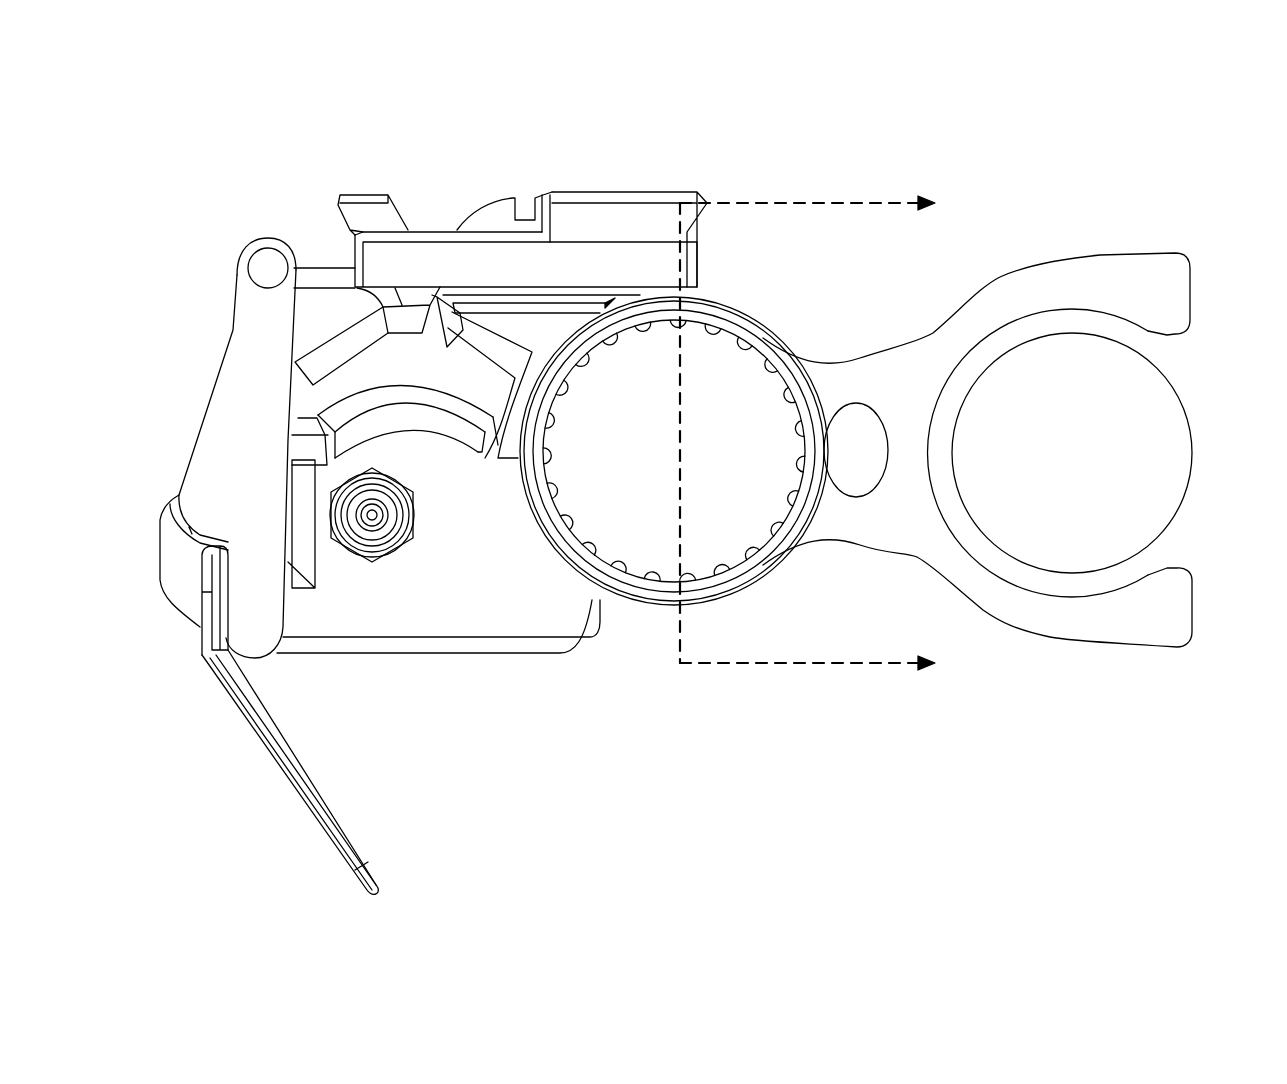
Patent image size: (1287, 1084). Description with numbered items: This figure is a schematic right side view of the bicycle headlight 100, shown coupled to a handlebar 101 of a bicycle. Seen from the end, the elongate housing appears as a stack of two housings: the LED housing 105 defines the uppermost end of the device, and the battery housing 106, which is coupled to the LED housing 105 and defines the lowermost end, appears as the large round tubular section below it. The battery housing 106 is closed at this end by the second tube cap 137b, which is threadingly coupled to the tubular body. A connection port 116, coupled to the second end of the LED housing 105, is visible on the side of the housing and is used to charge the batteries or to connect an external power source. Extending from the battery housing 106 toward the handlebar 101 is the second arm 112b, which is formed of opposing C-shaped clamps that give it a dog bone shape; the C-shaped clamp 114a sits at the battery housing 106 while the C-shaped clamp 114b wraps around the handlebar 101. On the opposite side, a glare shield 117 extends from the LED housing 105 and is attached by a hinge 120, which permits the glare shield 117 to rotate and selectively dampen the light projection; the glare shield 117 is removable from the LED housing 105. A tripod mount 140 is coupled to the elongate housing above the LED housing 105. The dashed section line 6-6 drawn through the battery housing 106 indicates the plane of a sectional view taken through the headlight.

The bicycle headlight 100 is at (856, 142).
The section line 6-6 is at (899, 203).
The LED housing 105 is at (413, 235).
The tripod mount 140 is at (588, 199).
The hinge 120 is at (266, 261).
The glare shield 117 is at (260, 752).
The second tube cap 137b is at (618, 578).
The connection port 116 is at (376, 562).
The second C-shaped clamp of first arm 114a is at (756, 322).
The battery housing 106 is at (592, 577).
The second C-shaped clamp of second arm 114b is at (1122, 280).
The second arm 112b is at (1102, 652).
The handlebar 101 is at (1167, 446).